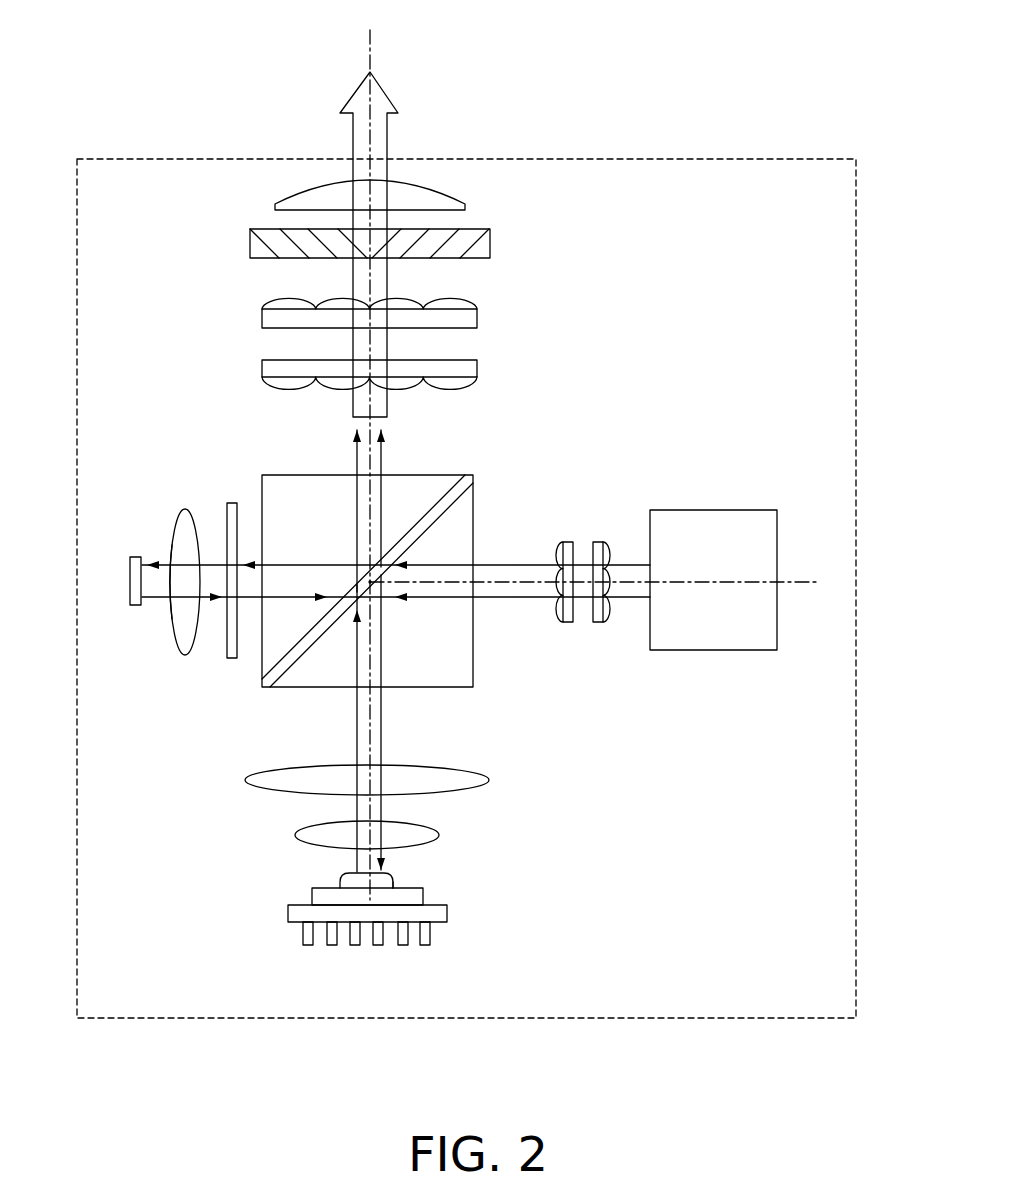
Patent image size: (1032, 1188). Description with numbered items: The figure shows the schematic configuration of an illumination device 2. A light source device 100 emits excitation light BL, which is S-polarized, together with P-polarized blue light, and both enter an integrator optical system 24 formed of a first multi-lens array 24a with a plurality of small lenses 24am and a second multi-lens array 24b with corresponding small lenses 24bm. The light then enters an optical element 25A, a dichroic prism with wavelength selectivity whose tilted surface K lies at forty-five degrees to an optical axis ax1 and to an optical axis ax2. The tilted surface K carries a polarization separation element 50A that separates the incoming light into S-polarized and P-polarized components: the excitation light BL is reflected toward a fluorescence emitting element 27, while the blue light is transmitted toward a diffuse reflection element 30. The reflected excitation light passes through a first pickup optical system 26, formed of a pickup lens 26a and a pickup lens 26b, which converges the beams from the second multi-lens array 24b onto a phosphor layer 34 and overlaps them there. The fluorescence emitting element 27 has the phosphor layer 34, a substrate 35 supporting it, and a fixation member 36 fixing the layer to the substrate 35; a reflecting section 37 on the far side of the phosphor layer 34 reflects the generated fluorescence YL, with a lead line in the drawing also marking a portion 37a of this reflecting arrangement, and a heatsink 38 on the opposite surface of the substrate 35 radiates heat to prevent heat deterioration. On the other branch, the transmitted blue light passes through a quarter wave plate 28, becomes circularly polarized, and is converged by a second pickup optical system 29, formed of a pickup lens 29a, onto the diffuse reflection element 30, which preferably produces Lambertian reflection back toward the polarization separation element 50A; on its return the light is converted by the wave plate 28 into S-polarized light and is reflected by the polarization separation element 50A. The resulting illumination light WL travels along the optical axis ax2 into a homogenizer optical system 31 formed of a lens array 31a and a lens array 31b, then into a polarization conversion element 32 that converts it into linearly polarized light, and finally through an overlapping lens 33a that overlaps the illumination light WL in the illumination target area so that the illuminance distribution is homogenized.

The illumination device 2 is at (796, 158).
The integrator optical system 24 is at (589, 564).
The first multi-lens array 24a is at (629, 585).
The second multi-lens array 24b is at (549, 585).
The small lenses 24am is at (605, 608).
The small lenses 24bm is at (558, 608).
The optical element 25A is at (474, 668).
The polarization separation element 50A is at (450, 490).
The tilted surface K is at (430, 513).
The first pickup optical system 26 is at (439, 812).
The pickup lens 26a is at (488, 780).
The pickup lens 26b is at (440, 835).
The fluorescence emitting element 27 is at (385, 930).
The wave plate 28 is at (234, 502).
The second pickup optical system 29 is at (182, 496).
The pickup lens 29a is at (173, 627).
The diffuse reflection element 30 is at (138, 556).
The homogenizer optical system 31 is at (437, 343).
The lens array 31a is at (477, 368).
The lens array 31b is at (477, 318).
The polarization conversion element 32 is at (490, 244).
The overlapping lens 33a is at (465, 206).
The phosphor layer 34 is at (345, 880).
The substrate 35 is at (313, 897).
The fixation member 36 is at (393, 882).
The reflecting section 37 is at (381, 900).
The light emitting region 37a is at (370, 894).
The heatsink 38 is at (290, 912).
The light source device 100 is at (695, 500).
The optical axis ax1 is at (628, 577).
The optical axis ax2 is at (373, 40).
The illumination light WL is at (353, 133).
The excitation light BL is at (396, 627).
The fluorescence YL is at (357, 522).